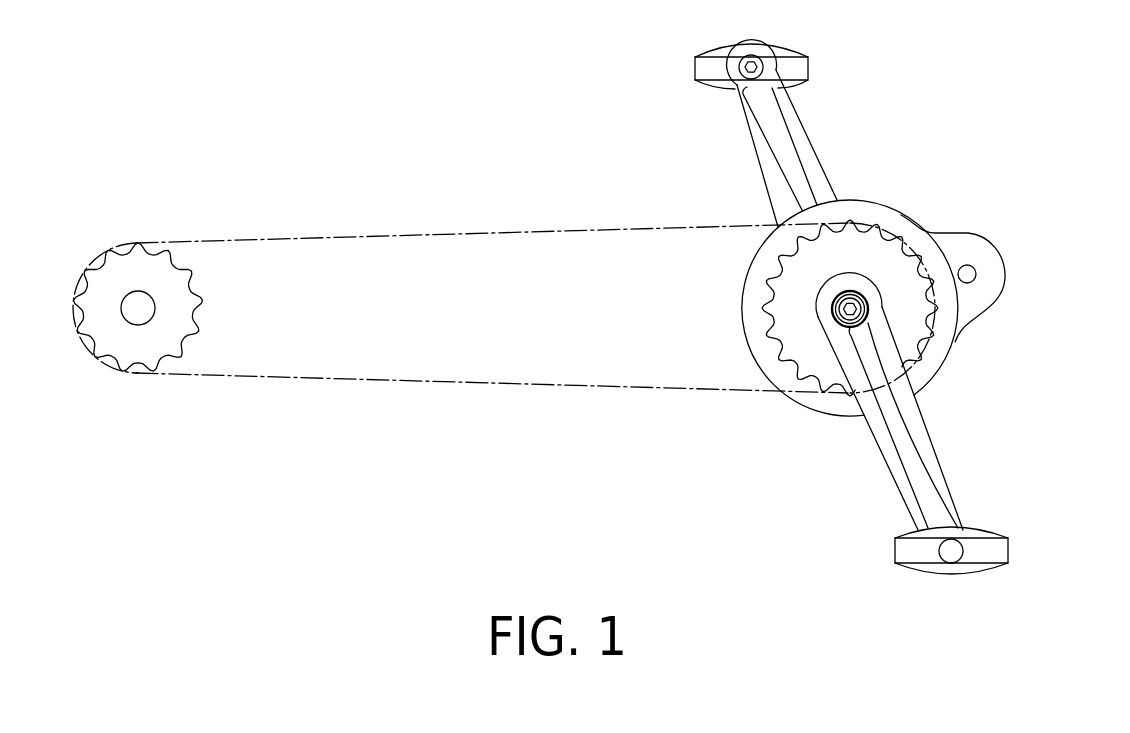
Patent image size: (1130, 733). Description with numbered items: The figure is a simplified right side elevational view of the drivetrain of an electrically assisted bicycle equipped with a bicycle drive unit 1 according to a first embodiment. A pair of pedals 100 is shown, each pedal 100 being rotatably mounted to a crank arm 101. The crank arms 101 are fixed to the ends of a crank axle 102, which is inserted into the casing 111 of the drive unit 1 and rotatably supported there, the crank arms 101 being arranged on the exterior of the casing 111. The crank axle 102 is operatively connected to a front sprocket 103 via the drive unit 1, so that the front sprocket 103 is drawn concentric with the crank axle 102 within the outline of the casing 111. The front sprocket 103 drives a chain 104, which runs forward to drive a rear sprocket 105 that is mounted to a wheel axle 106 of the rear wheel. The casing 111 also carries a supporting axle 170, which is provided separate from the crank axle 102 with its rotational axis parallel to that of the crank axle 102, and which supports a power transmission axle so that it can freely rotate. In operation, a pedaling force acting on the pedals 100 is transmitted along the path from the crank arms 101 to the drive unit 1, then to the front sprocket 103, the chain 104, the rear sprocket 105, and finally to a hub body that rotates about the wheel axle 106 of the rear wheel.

The bicycle drive unit 1 is at (860, 203).
The pedals 100 is at (993, 557).
The crank arm 101 is at (951, 475).
The crank axle 102 is at (865, 310).
The front sprocket 103 is at (826, 388).
The chain 104 is at (637, 388).
The rear sprocket 105 is at (165, 357).
The wheel axle 106 is at (138, 300).
The casing 111 is at (907, 226).
The supporting axle 170 is at (976, 276).